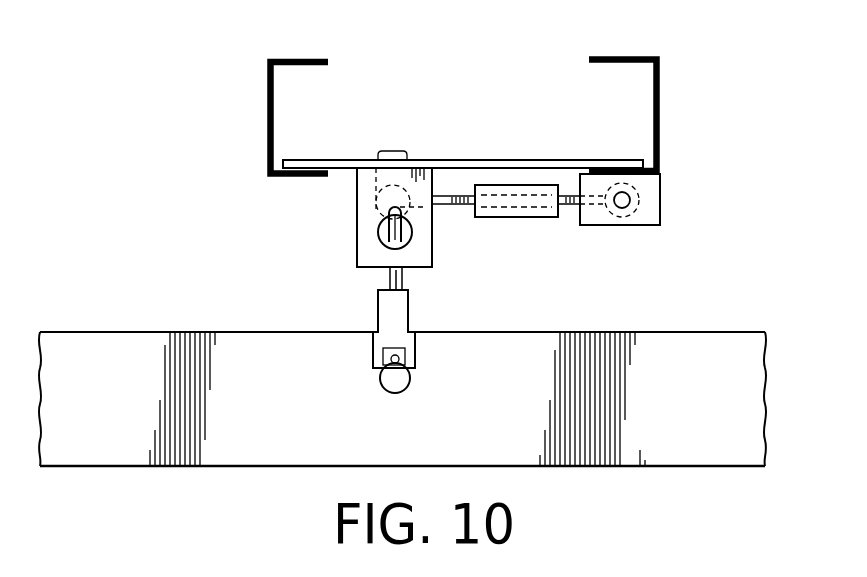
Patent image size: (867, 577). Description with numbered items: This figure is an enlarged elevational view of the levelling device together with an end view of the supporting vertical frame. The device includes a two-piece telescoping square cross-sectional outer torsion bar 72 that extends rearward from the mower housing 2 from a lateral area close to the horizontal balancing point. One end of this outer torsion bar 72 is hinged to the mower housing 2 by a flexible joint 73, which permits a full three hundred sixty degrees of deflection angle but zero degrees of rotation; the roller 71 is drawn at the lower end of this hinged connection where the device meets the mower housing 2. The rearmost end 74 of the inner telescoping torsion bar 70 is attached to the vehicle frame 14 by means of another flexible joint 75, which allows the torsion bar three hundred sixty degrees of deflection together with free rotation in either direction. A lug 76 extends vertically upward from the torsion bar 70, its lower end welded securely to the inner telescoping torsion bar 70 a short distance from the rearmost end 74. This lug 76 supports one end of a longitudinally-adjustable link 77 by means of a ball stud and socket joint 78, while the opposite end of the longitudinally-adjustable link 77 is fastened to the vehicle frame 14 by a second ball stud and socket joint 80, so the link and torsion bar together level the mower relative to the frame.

The mower housing 2 is at (128, 403).
The vehicle frame 14 is at (660, 107).
The inner telescoping torsion bar 70 is at (390, 281).
The roller 71 is at (381, 391).
The outer torsion bar 72 is at (395, 312).
The flexible joint 73 is at (378, 358).
The rearmost end 74 is at (378, 200).
The flexible joint 75 is at (378, 232).
The lug 76 is at (432, 253).
The longitudinally-adjustable link 77 is at (525, 217).
The ball stud and socket joint 78 is at (376, 182).
The ball stud and socket joint 80 is at (660, 207).